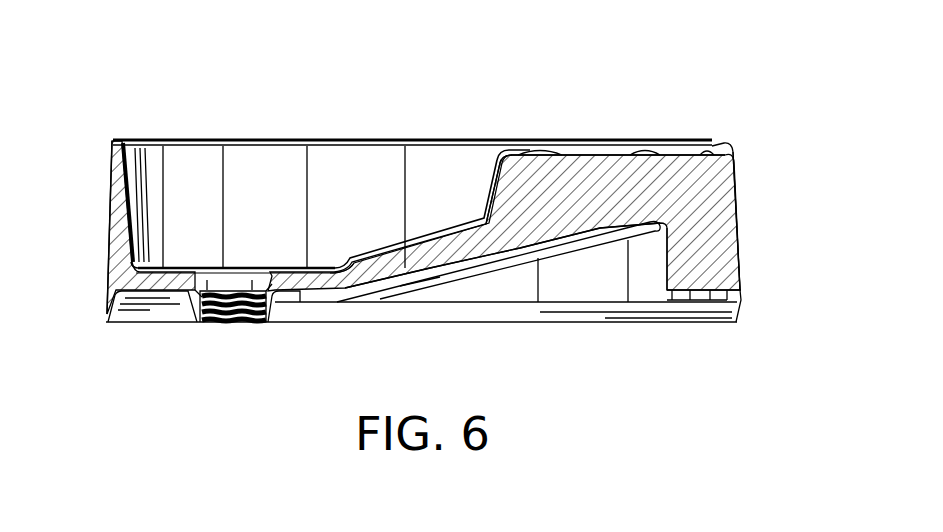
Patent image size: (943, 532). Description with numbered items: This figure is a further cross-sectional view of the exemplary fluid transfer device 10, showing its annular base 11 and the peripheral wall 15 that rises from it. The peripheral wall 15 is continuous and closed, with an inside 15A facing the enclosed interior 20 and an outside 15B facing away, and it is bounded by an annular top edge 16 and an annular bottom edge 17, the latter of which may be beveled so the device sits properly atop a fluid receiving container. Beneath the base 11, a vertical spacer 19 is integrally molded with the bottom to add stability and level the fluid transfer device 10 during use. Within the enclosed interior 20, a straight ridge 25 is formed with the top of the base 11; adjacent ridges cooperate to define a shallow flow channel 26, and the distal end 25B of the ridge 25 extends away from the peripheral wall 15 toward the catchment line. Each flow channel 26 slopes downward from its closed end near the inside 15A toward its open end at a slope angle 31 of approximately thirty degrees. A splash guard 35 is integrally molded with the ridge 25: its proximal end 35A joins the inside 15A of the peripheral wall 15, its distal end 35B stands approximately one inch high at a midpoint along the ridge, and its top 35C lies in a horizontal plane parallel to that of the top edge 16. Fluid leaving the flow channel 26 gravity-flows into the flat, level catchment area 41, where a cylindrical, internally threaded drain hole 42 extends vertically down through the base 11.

The fluid transfer device 10 is at (768, 64).
The annular base 11 is at (313, 140).
The peripheral wall 15 is at (739, 240).
The inside of peripheral wall 15A is at (132, 186).
The outside of peripheral wall 15B is at (738, 200).
The annular top edge 16 is at (112, 141).
The annular bottom edge 17 is at (108, 322).
The vertical spacer 19 is at (666, 275).
The enclosed interior 20 is at (239, 160).
The ridge 25 is at (372, 266).
The distal end of ridge 25B is at (330, 258).
The flow channel 26 is at (553, 242).
The slope angle 31 is at (478, 284).
The splash guard 35 is at (593, 170).
The proximal end of splash guard 35A is at (712, 143).
The distal end of splash guard 35B is at (490, 180).
The top of splash guard 35C is at (633, 152).
The catchment area 41 is at (183, 268).
The drain hole 42 is at (240, 284).